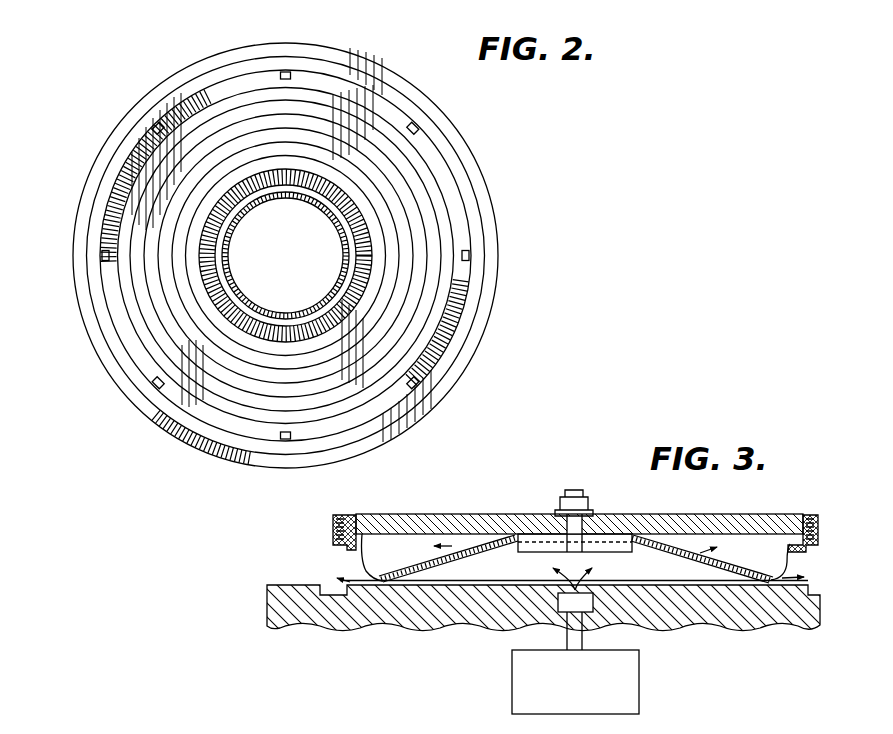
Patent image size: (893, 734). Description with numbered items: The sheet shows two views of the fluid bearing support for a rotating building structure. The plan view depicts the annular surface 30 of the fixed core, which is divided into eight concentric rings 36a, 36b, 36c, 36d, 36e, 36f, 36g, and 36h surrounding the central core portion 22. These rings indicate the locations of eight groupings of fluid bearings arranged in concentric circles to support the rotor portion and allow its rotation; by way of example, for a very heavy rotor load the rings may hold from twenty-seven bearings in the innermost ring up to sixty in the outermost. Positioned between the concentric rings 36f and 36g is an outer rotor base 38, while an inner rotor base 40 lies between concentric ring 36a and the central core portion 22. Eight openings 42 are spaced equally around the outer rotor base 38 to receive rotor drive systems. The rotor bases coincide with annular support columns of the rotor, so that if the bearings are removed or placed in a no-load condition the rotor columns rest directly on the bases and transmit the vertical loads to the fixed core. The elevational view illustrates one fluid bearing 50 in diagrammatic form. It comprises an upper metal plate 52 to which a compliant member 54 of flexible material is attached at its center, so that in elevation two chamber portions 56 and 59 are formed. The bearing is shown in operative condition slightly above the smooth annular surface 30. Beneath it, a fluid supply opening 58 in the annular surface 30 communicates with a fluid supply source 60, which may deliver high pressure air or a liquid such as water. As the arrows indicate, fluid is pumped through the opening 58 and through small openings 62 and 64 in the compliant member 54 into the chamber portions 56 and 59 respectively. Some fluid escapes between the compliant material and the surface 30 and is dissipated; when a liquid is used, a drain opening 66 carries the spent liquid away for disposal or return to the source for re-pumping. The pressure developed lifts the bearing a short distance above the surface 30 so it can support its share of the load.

In FIG. 2, the central core portion 22 is at (231, 227).
In FIG. 2, the annular surface 30 is at (464, 137).
In FIG. 3, the annular surface 30 is at (645, 584).
In FIG. 2, the concentric ring 36a is at (378, 246).
In FIG. 2, the concentric ring 36b is at (392, 283).
In FIG. 2, the concentric ring 36c is at (385, 330).
In FIG. 2, the concentric ring 36d is at (410, 315).
In FIG. 2, the concentric ring 36e is at (432, 290).
In FIG. 2, the concentric ring 36f is at (448, 265).
In FIG. 2, the concentric ring 36g is at (478, 228).
In FIG. 2, the concentric ring 36h is at (481, 196).
In FIG. 2, the outer rotor base 38 is at (442, 167).
In FIG. 2, the inner rotor base 40 is at (206, 257).
In FIG. 2, the openings 42 is at (291, 72).
In FIG. 3, the fluid bearing 50 is at (604, 498).
In FIG. 3, the upper metal plate 52 is at (506, 523).
In FIG. 3, the compliant member 54 is at (362, 558).
In FIG. 3, the chamber portion 56 is at (408, 543).
In FIG. 3, the fluid supply opening 58 is at (552, 608).
In FIG. 3, the chamber portion 59 is at (750, 543).
In FIG. 3, the fluid supply source 60 is at (628, 670).
In FIG. 3, the small opening 62 is at (457, 552).
In FIG. 3, the small opening 64 is at (680, 563).
In FIG. 3, the drain opening 66 is at (332, 596).